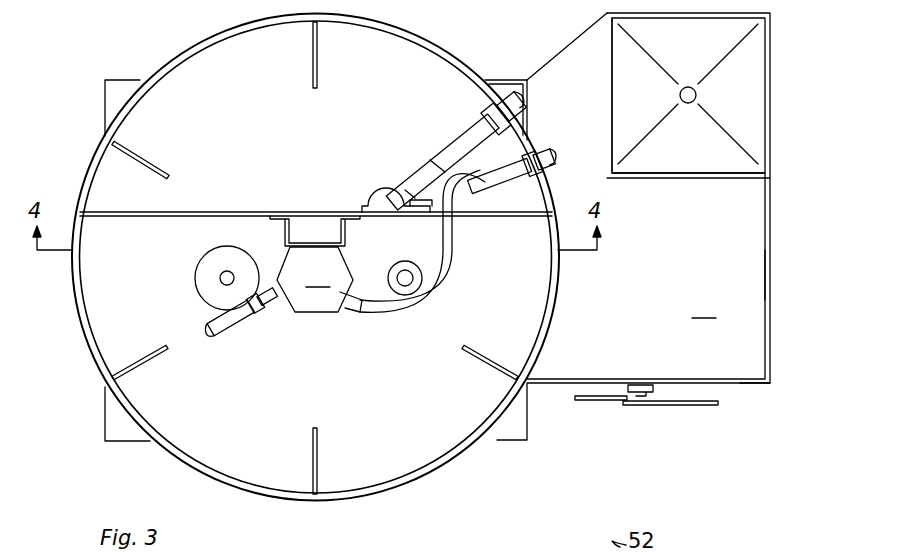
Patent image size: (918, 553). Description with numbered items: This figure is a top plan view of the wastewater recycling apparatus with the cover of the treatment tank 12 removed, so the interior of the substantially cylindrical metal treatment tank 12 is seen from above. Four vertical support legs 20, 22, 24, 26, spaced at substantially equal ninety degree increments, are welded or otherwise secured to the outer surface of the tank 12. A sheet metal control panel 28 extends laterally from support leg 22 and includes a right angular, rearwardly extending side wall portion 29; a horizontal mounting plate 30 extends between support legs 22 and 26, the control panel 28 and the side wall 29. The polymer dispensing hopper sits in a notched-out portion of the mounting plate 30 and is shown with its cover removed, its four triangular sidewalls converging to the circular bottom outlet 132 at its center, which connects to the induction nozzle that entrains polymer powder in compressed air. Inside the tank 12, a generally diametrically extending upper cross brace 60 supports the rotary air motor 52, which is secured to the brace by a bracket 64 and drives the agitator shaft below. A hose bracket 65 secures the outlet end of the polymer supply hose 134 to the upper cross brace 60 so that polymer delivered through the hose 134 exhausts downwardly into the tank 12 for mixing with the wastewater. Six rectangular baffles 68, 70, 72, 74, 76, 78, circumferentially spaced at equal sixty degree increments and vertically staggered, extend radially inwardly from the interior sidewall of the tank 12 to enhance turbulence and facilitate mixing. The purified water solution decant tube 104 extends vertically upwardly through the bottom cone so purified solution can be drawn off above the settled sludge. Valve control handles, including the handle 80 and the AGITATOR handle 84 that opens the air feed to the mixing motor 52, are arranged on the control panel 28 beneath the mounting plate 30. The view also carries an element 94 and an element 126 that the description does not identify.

The treatment tank 12 is at (80, 341).
The vertical support leg 20 is at (104, 442).
The vertical support leg 22 is at (502, 444).
The vertical support leg 24 is at (106, 94).
The vertical support leg 26 is at (514, 68).
The control panel 28 is at (746, 384).
The side wall portion 29 is at (770, 276).
The mounting plate 30 is at (648, 198).
The rotary air motor 52 is at (279, 291).
The upper cross brace 60 is at (166, 187).
The bracket 64 is at (320, 234).
The hose bracket 65 is at (384, 188).
The baffle 68 is at (146, 158).
The baffle 70 is at (312, 58).
The baffle 72 is at (486, 174).
The baffle 74 is at (492, 372).
The baffle 76 is at (312, 444).
The baffle 78 is at (154, 368).
The valve control handle 80 is at (672, 404).
The AGITATOR control handle 84 is at (596, 404).
The disc 94 is at (202, 264).
The decant tube 104 is at (420, 266).
The tube 126 is at (432, 324).
The circular bottom outlet 132 is at (682, 86).
The polymer supply hose 134 is at (460, 150).